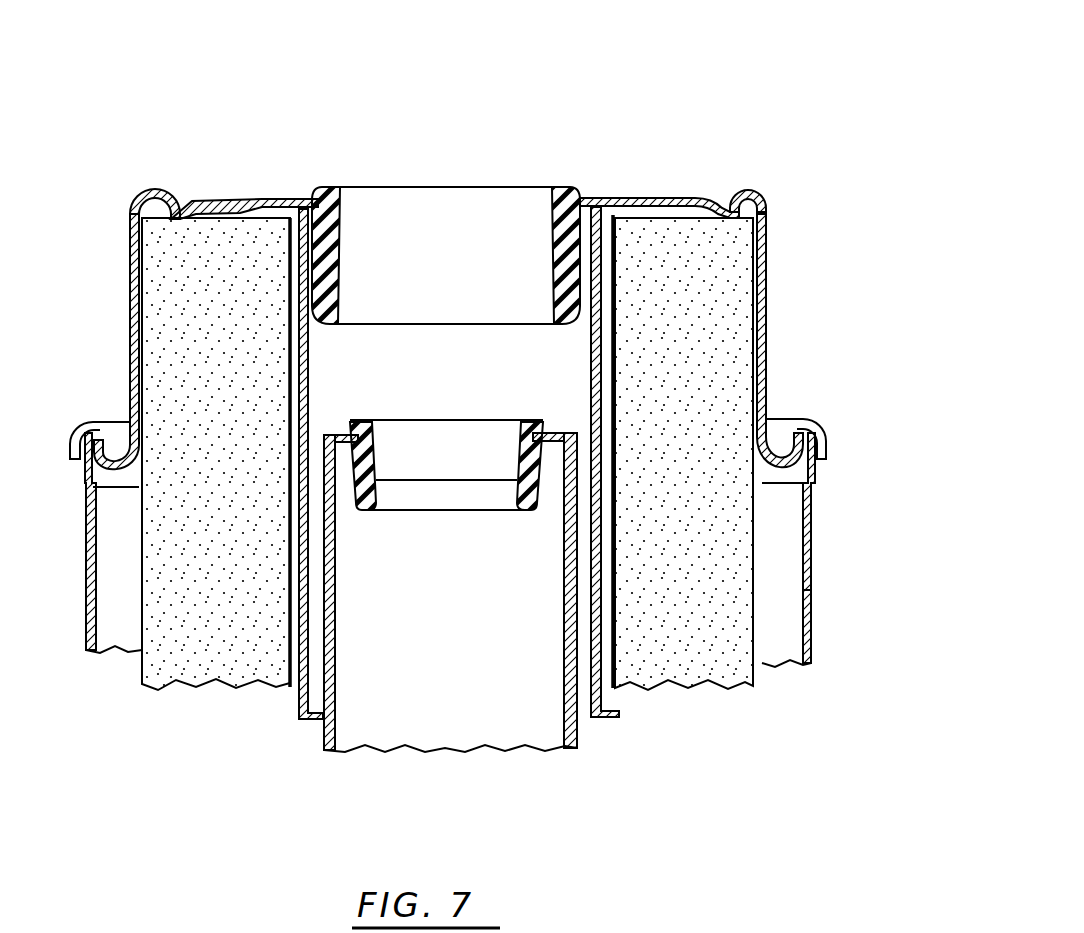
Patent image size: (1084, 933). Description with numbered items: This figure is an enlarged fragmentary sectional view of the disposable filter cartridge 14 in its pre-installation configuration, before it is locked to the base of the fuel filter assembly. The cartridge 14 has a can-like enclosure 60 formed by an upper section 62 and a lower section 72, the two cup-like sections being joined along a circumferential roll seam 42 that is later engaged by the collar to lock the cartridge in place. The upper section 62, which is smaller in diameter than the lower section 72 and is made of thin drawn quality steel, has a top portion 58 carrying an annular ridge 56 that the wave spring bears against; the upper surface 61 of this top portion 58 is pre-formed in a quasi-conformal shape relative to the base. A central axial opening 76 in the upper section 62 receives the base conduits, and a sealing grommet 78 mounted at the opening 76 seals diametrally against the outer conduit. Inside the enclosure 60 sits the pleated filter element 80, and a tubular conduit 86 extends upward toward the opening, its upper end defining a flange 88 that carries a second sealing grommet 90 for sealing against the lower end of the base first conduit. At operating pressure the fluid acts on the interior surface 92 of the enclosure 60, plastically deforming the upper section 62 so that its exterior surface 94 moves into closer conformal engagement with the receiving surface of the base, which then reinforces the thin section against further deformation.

The disposable filter cartridge 14 is at (469, 409).
The roll seam 42 is at (822, 420).
The annular ridge 56 is at (740, 192).
The top portion 58 is at (200, 200).
The filter cartridge enclosure 60 is at (811, 530).
The upper surface 61 is at (245, 200).
The upper section 62 is at (768, 331).
The lower section 72 is at (818, 628).
The central axial opening 76 is at (578, 196).
The sealing grommet 78 is at (531, 325).
The filter element 80 is at (222, 668).
The tubular conduit 86 is at (462, 738).
The flange 88 is at (338, 435).
The second sealing grommet 90 is at (502, 513).
The interior surface 92 is at (143, 332).
The exterior surface 94 is at (128, 271).